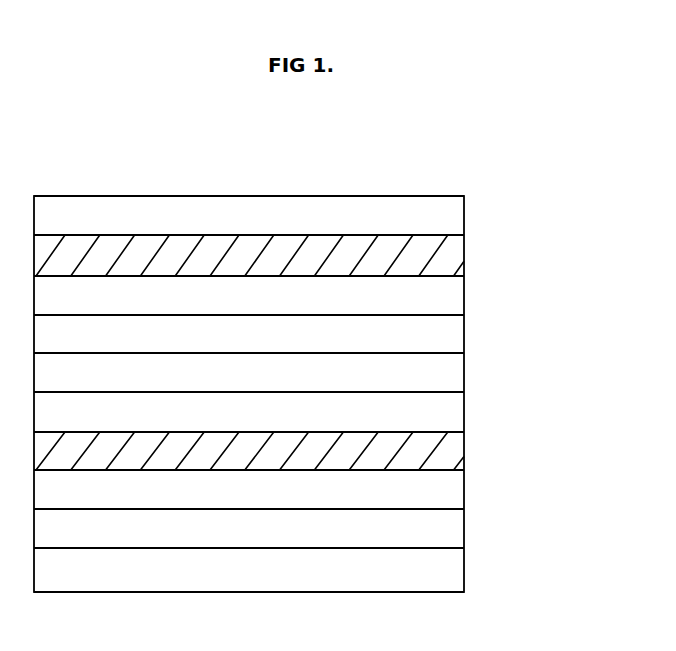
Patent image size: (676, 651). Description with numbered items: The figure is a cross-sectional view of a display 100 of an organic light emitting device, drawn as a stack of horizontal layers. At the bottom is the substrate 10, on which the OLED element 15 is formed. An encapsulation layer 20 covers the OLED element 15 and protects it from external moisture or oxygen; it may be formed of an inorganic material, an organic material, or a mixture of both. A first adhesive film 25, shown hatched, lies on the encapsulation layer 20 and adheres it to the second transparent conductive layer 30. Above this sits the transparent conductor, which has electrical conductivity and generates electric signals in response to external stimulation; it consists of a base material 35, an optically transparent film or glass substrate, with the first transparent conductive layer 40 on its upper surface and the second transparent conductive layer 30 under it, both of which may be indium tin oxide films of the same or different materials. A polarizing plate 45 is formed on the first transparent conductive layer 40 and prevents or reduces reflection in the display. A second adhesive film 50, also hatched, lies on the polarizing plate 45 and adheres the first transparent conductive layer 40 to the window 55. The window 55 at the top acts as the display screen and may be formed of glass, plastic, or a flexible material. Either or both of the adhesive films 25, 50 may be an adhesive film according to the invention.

The display 100 is at (460, 188).
The window 55 is at (448, 217).
The second adhesive film 50 is at (448, 256).
The polarizing plate 45 is at (448, 294).
The first transparent conductive layer 40 is at (448, 333).
The base material 35 is at (448, 371).
The second transparent conductive layer 30 is at (448, 413).
The first adhesive film 25 is at (448, 449).
The encapsulation layer 20 is at (448, 491).
The OLED element 15 is at (448, 531).
The substrate 10 is at (448, 569).